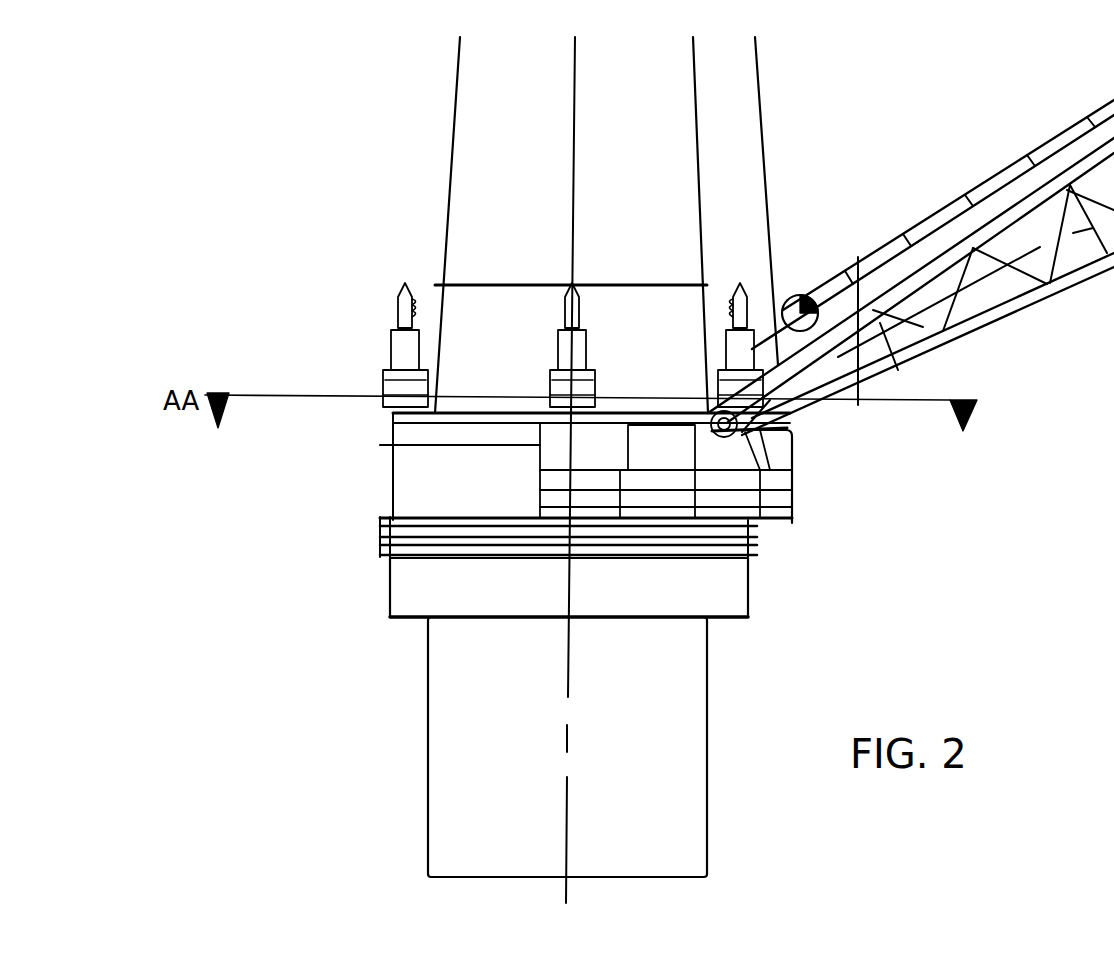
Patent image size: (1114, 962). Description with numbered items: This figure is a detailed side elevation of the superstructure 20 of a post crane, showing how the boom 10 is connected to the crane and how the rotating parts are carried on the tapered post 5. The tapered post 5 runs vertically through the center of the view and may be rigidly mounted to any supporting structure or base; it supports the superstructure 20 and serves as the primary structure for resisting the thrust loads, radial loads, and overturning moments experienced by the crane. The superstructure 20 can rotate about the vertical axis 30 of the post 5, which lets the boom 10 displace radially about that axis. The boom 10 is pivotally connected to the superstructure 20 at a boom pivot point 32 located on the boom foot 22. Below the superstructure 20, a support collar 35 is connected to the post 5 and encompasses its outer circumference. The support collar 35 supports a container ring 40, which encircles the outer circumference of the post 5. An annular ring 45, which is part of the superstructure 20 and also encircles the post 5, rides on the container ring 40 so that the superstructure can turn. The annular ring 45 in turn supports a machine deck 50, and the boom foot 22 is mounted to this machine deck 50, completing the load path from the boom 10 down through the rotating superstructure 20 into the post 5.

The tapered post 5 is at (651, 171).
The boom 10 is at (948, 343).
The superstructure 20 is at (527, 450).
The boom foot 22 is at (793, 482).
The vertical axis 30 is at (575, 128).
The boom pivot point 32 is at (793, 457).
The support collar 35 is at (748, 597).
The container ring 40 is at (758, 548).
The annular ring 45 is at (393, 480).
The machine deck 50 is at (372, 412).